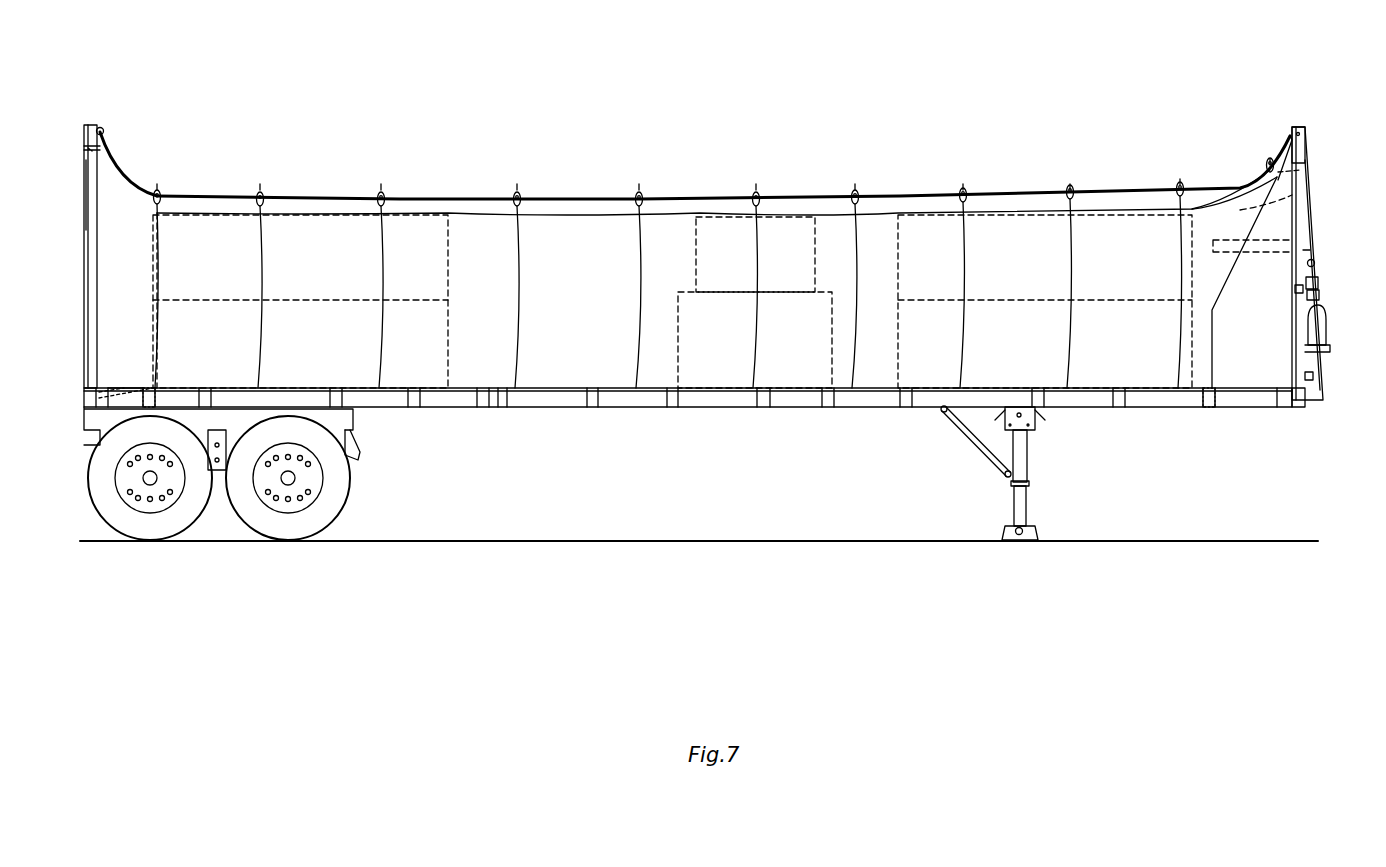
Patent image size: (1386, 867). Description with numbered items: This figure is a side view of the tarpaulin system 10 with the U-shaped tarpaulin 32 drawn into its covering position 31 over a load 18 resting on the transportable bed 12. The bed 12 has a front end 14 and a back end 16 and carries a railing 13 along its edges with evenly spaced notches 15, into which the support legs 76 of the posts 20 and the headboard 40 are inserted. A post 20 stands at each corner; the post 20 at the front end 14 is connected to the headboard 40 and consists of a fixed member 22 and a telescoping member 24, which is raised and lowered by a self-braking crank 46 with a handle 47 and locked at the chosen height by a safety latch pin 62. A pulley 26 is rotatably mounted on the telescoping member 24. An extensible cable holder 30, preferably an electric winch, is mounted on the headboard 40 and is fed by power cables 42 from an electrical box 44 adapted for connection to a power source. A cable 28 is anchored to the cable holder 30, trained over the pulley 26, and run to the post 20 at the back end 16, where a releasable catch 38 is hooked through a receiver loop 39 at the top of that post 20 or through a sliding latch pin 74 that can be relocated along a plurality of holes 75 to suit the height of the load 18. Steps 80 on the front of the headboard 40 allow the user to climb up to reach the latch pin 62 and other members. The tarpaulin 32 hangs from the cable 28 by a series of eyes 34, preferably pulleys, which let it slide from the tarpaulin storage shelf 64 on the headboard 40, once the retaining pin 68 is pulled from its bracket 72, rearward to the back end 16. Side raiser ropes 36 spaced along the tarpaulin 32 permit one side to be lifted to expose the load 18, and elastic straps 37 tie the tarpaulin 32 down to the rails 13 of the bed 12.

The tarpaulin system 10 is at (785, 66).
The transportable bed 12 is at (546, 388).
The railing 13 is at (556, 405).
The front end 14 is at (1292, 407).
The notches 15 is at (322, 388).
The back end 16 is at (80, 415).
The load 18 is at (324, 343).
The post 20 is at (84, 288).
The fixed member 22 is at (1305, 222).
The telescoping member 24 is at (1307, 142).
The pulley 26 is at (1292, 132).
The cable 28 is at (447, 199).
The extensible cable holder 30 is at (1330, 348).
The covering position 31 is at (153, 316).
The U-shaped tarpaulin 32 is at (604, 268).
The eyes 34 is at (160, 190).
The side raiser ropes 36 is at (259, 272).
The straps 37 is at (452, 388).
The releasable catch 38 is at (104, 133).
The receiver loop 39 is at (100, 126).
The headboard 40 is at (1268, 338).
The power cables 42 is at (1326, 318).
The electrical box 44 is at (1319, 302).
The self-braking crank 46 is at (1315, 263).
The handle 47 is at (1318, 283).
The safety latch pin 62 is at (1312, 258).
The tarpaulin storage shelf 64 is at (1212, 240).
The retaining pin 68 is at (1310, 171).
The retaining pin bracket 72 is at (1245, 212).
The sliding latch pin 74 is at (84, 147).
The holes 75 is at (90, 212).
The support legs 76 is at (97, 388).
The steps 80 is at (1313, 376).